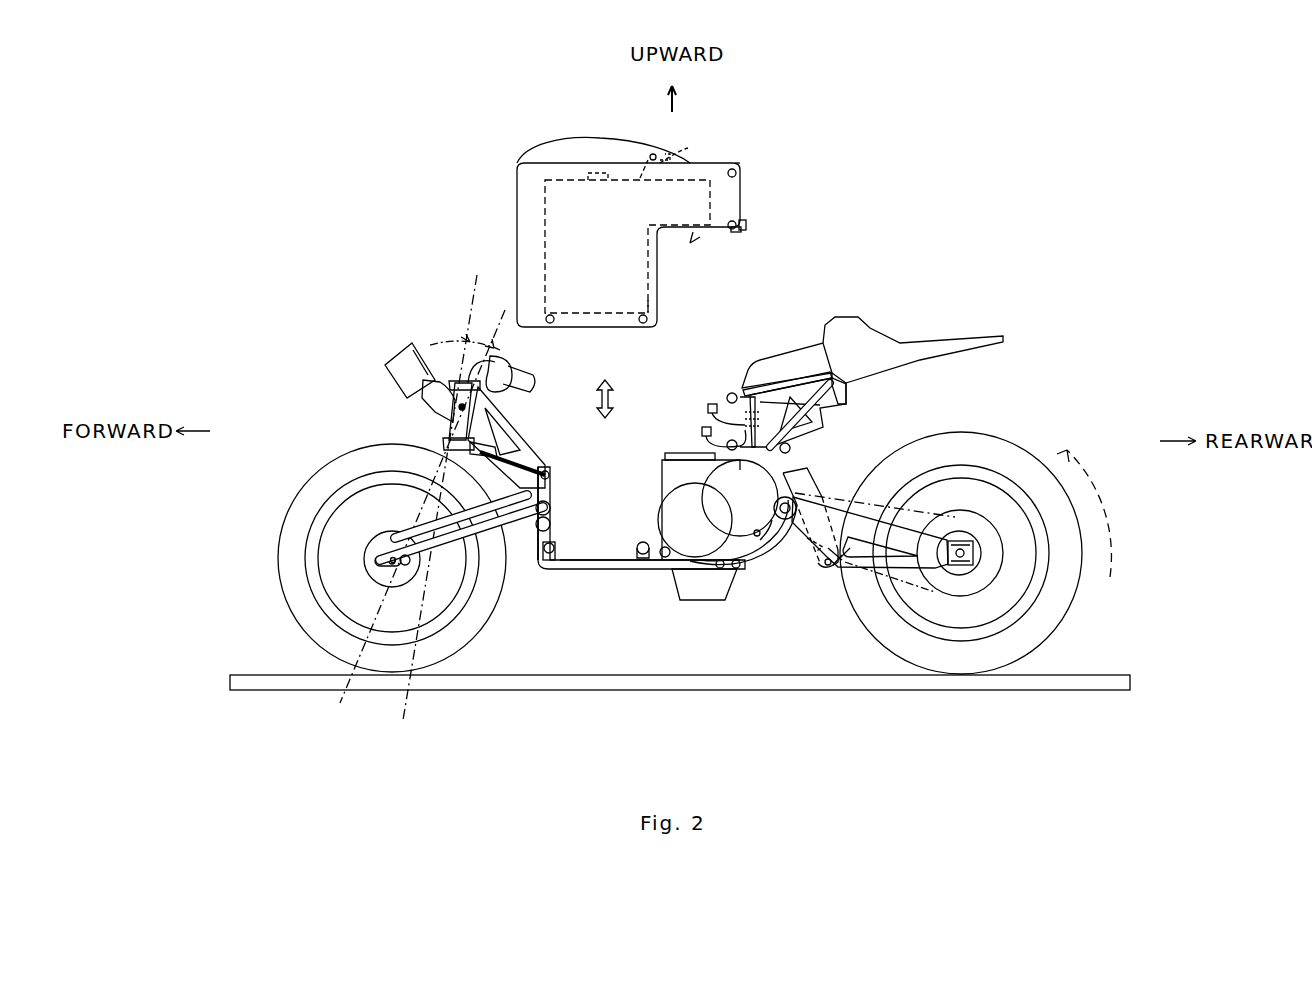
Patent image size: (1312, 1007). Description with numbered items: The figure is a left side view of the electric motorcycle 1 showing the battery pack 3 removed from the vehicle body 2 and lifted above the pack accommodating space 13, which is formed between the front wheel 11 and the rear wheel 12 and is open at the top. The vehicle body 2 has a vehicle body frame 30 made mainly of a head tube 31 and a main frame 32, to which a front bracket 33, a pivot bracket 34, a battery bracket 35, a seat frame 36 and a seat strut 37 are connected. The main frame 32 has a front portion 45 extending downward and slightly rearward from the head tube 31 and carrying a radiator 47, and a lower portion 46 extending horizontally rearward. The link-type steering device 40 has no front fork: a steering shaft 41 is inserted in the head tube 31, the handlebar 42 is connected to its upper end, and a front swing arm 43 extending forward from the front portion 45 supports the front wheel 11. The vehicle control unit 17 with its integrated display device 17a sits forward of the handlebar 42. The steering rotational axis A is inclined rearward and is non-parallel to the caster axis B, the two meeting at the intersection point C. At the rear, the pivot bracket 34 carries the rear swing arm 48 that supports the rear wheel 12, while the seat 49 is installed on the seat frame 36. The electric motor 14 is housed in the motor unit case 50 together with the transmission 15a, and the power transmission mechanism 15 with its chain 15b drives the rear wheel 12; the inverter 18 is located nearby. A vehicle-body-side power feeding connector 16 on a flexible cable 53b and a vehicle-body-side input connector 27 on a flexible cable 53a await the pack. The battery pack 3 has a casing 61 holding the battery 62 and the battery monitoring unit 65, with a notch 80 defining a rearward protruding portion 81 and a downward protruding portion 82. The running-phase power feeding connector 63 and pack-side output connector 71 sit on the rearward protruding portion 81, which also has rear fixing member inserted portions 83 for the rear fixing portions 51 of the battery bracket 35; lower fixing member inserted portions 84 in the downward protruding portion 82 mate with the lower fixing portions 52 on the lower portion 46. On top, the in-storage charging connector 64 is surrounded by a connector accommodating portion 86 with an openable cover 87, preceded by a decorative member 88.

The electric motorcycle 1 is at (1009, 221).
The vehicle body 2 is at (1041, 319).
The battery pack 3 is at (807, 151).
The front wheel 11 is at (293, 592).
The rear wheel 12 is at (1060, 593).
The pack accommodating space 13 is at (698, 355).
The electric motor 14 is at (688, 572).
The power transmission mechanism 15 is at (840, 600).
The transmission 15a is at (745, 560).
The chain 15b is at (850, 560).
The vehicle-body-side power feeding connector 16 is at (708, 410).
The vehicle control unit 17 is at (395, 365).
The display device 17a is at (418, 352).
The inverter 18 is at (850, 383).
The vehicle-body-side input connector 27 is at (702, 432).
The vehicle body frame 30 is at (670, 583).
The head tube 31 is at (450, 430).
The main frame 32 is at (543, 589).
The front bracket 33 is at (422, 395).
The pivot bracket 34 is at (770, 572).
The battery bracket 35 is at (800, 440).
The seat frame 36 is at (808, 375).
The seat strut 37 is at (815, 410).
The steering device 40 is at (460, 574).
The steering shaft 41 is at (478, 450).
The handlebar 42 is at (515, 385).
The front swing arm 43 is at (445, 588).
The front portion 45 is at (510, 445).
The lower portion 46 is at (600, 572).
The radiator 47 is at (490, 590).
The rear swing arm 48 is at (830, 575).
The seat 49 is at (780, 360).
The motor unit case 50 is at (712, 598).
The rear fixing portions 51 is at (790, 450).
The lower fixing portions 52 is at (644, 560).
The flexible cable 53a is at (727, 445).
The flexible cable 53b is at (735, 393).
The casing 61 is at (517, 200).
The battery 62 is at (598, 313).
The running-phase power feeding connector 63 is at (746, 226).
The in-storage charging connector 64 is at (648, 178).
The battery monitoring unit 65 is at (597, 175).
The pack-side output connector 71 is at (738, 232).
The notch 80 is at (690, 243).
The rearward protruding portion 81 is at (720, 165).
The downward protruding portion 82 is at (570, 328).
The rear fixing member inserted portions 83 is at (736, 224).
The lower fixing member inserted portions 84 is at (643, 324).
The connector accommodating portion 86 is at (646, 160).
The cover 87 is at (668, 150).
The decorative member 88 is at (556, 152).
The steering rotational axis A is at (462, 320).
The caster axis B is at (340, 703).
The intersection point C is at (455, 405).